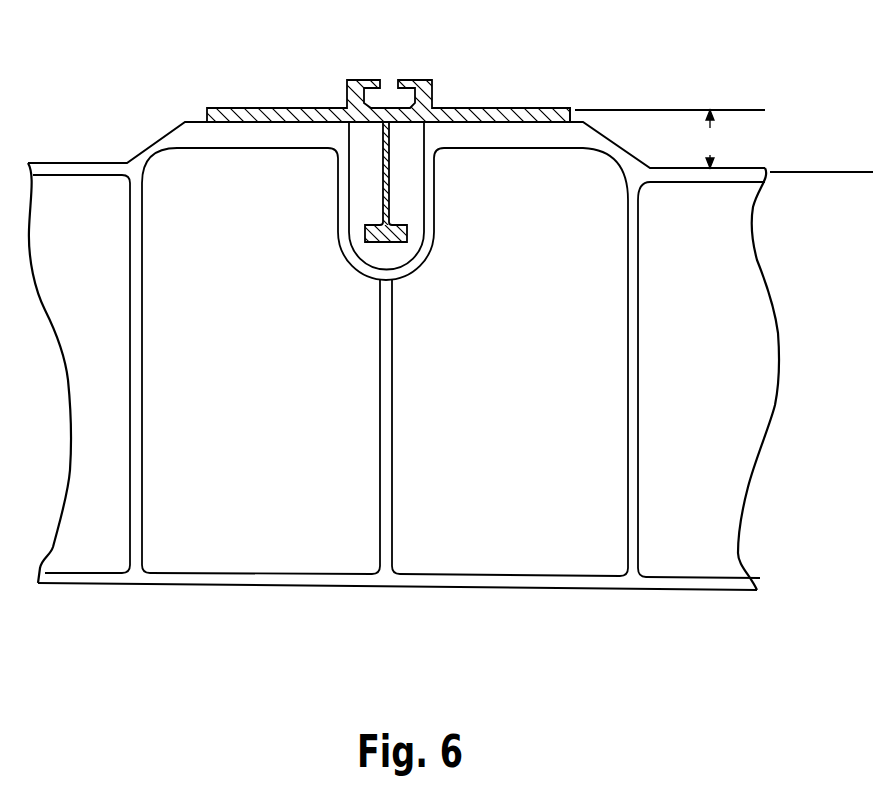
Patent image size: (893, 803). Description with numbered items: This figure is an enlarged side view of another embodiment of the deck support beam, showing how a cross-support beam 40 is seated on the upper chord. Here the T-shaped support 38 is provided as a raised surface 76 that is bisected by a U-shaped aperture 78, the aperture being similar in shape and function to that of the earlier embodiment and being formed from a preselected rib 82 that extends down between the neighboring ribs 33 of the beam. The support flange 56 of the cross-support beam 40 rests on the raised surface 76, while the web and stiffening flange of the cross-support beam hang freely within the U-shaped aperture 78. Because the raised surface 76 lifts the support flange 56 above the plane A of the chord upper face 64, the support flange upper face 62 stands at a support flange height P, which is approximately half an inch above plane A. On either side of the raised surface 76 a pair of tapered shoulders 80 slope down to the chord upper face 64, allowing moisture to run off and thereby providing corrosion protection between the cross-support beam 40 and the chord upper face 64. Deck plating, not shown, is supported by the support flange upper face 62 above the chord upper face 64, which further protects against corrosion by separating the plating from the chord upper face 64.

The ribs 33 is at (135, 308).
The T-shaped support 38 is at (143, 130).
The cross-support beam 40 is at (257, 110).
The support flange 56 is at (452, 117).
The support flange upper face 62 is at (533, 112).
The chord upper face 64 is at (83, 167).
The raised surface 76 is at (198, 120).
The U-shaped aperture 78 is at (398, 248).
The tapered shoulders 80 is at (138, 150).
The preselected rib 82 is at (385, 397).
The support flange height P is at (670, 139).
The plane A is at (820, 172).